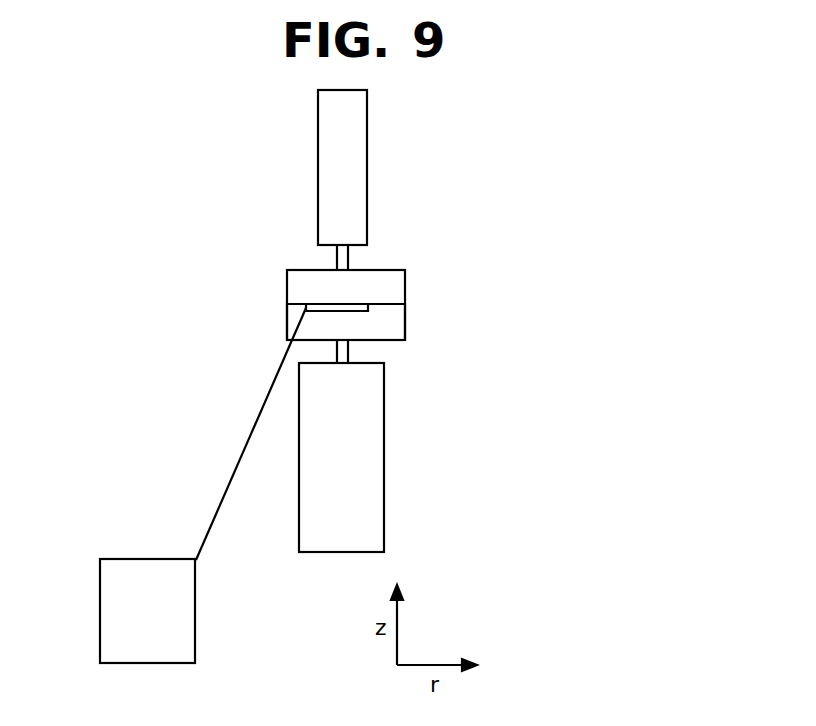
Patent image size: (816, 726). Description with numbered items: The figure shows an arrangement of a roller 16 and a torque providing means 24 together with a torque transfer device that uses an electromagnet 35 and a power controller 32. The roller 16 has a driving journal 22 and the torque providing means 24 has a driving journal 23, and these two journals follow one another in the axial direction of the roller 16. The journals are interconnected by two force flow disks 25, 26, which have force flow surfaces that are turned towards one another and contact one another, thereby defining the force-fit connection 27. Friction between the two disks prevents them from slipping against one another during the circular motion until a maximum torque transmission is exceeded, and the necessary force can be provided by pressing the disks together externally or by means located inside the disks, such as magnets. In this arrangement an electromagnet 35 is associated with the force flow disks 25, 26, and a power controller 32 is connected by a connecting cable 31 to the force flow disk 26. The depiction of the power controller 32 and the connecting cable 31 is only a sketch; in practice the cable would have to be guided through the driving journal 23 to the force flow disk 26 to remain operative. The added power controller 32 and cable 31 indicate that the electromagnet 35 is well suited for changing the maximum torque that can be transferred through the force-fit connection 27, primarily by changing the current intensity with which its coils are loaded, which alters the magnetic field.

The roller 16 is at (324, 134).
The driving journal 22 is at (338, 261).
The driving journal 23 is at (350, 350).
The torque providing means 24 is at (357, 448).
The force flow disk 25 is at (323, 285).
The force flow disk 26 is at (358, 326).
The force-fit connection 27 is at (367, 273).
The connecting cable 31 is at (242, 462).
The power controller 32 is at (188, 624).
The electromagnet 35 is at (358, 302).